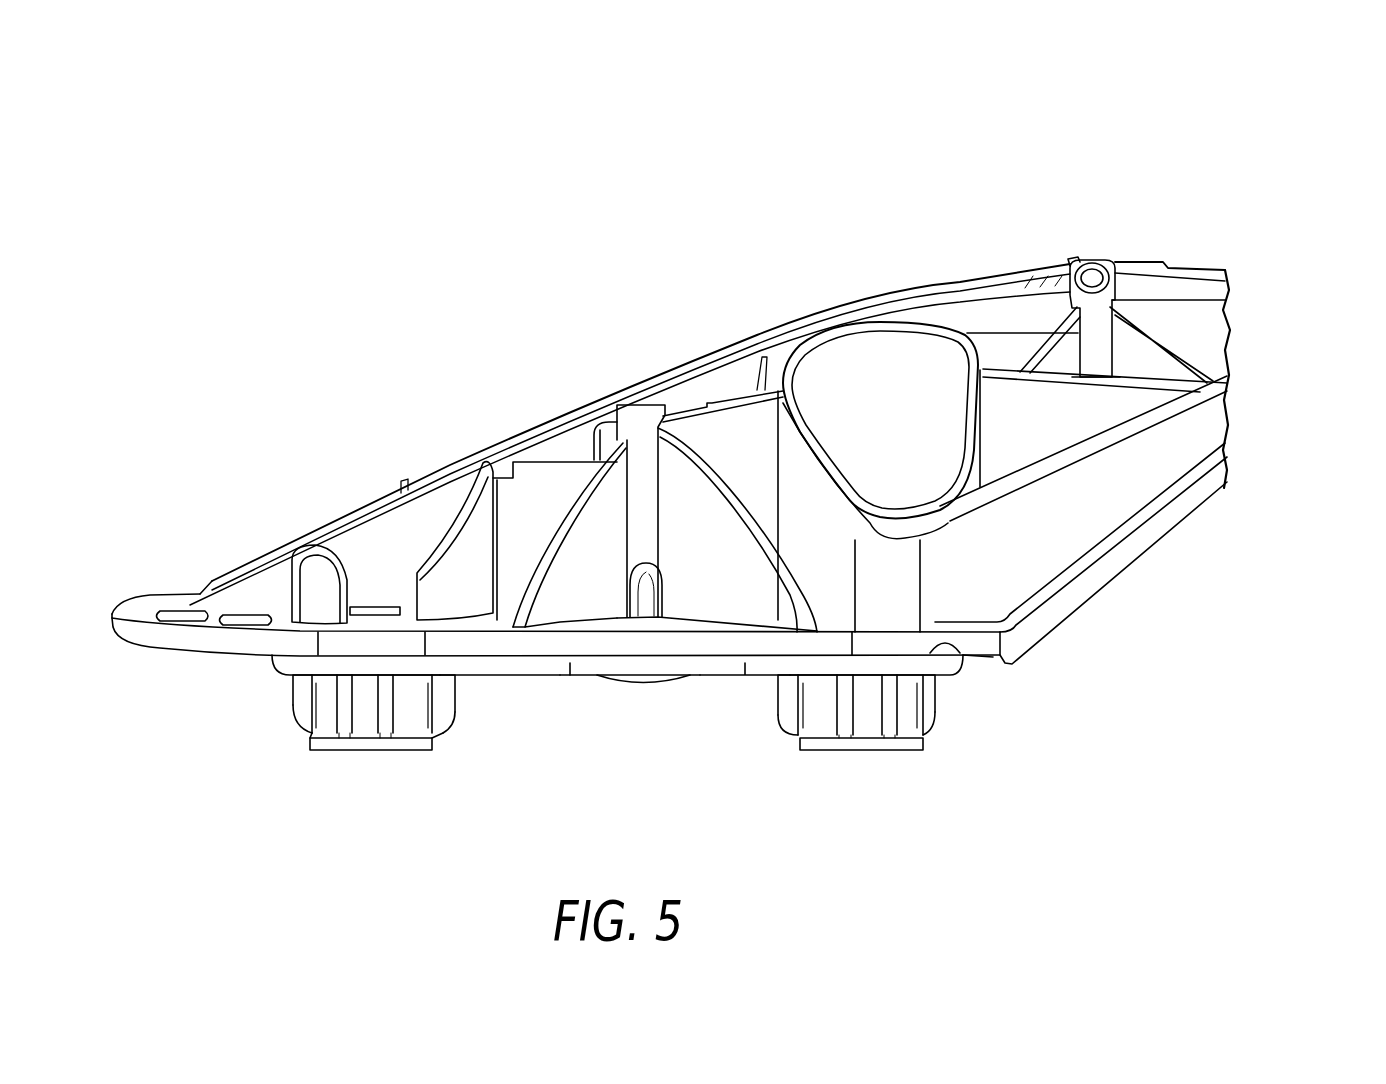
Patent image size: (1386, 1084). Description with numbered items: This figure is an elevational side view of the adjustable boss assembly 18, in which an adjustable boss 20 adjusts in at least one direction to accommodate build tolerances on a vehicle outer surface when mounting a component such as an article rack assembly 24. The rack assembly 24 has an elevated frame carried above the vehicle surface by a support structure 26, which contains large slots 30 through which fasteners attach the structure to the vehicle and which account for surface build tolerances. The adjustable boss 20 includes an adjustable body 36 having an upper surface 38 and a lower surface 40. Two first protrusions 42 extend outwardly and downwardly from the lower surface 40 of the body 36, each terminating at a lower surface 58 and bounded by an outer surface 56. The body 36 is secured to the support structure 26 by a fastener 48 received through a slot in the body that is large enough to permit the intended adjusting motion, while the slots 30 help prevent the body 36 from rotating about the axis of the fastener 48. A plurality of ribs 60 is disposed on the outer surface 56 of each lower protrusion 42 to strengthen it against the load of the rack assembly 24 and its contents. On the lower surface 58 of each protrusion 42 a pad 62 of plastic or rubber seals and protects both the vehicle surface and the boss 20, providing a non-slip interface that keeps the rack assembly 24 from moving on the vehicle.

The adjustable boss assembly 18 is at (1281, 129).
The adjustable boss 20 is at (570, 675).
The article rack assembly 24 is at (757, 338).
The support structure 26 is at (927, 288).
The slot 30 is at (383, 606).
The adjustable body 36 is at (745, 677).
The upper surface 38 is at (962, 657).
The lower surface 40 is at (500, 677).
The first protrusion 42 is at (292, 705).
The fastener 48 is at (647, 684).
The outer surface 56 is at (293, 692).
The lower surface 58 is at (345, 750).
The ribs 60 is at (293, 722).
The pad 62 is at (405, 750).